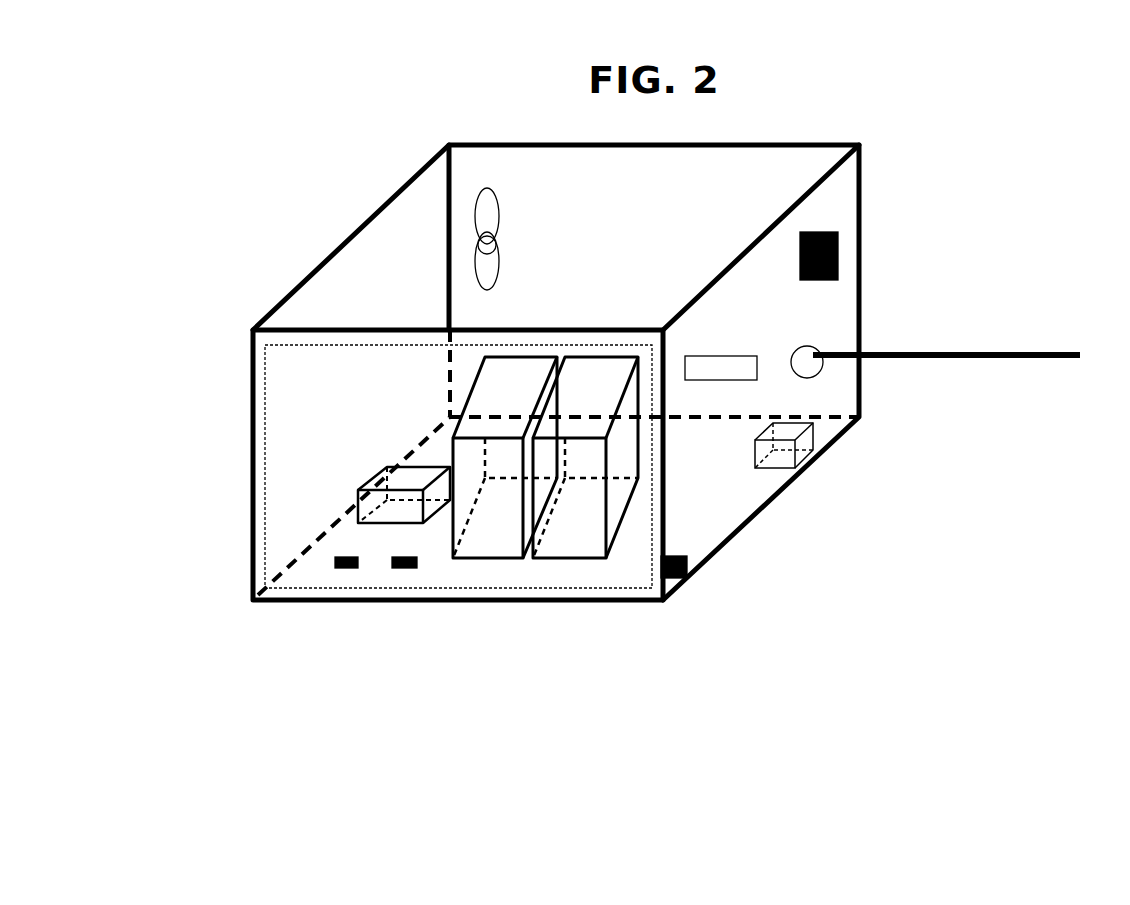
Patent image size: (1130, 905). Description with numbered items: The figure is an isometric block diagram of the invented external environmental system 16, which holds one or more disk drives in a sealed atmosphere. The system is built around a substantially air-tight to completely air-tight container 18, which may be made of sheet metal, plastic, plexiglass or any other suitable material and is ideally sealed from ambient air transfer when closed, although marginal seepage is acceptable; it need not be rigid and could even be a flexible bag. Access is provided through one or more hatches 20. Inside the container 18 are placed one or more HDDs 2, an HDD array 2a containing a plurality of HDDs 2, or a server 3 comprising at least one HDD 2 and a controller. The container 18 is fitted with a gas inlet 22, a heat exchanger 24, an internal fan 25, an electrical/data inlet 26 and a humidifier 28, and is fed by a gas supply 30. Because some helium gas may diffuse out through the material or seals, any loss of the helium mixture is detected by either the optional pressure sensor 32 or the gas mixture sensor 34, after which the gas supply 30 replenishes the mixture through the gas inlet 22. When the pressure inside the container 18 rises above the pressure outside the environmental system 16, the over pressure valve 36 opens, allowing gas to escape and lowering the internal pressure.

The HDD 2 is at (355, 468).
The HDD array 2a is at (427, 378).
The server 3 is at (568, 568).
The environmental system 16 is at (195, 235).
The container 18 is at (859, 189).
The hatch 20 is at (648, 378).
The gas inlet 22 is at (823, 365).
The heat exchanger 24 is at (838, 256).
The internal fan 25 is at (473, 220).
The electrical/data inlet 26 is at (757, 380).
The humidifier 28 is at (800, 450).
The gas supply 30 is at (925, 353).
The pressure sensor 32 is at (418, 570).
The gas mixture sensor 34 is at (333, 568).
The over pressure valve 36 is at (665, 600).